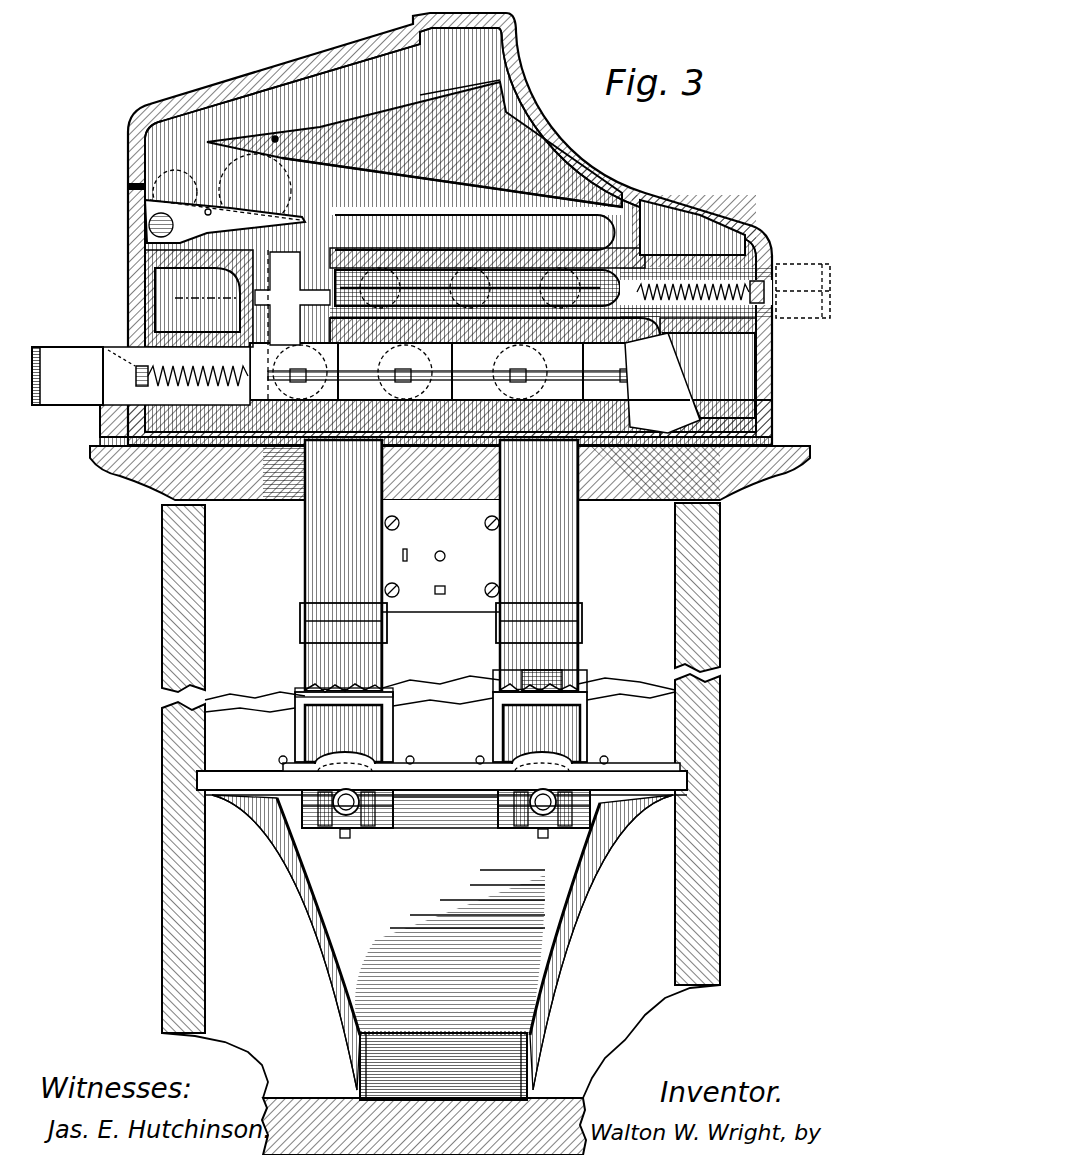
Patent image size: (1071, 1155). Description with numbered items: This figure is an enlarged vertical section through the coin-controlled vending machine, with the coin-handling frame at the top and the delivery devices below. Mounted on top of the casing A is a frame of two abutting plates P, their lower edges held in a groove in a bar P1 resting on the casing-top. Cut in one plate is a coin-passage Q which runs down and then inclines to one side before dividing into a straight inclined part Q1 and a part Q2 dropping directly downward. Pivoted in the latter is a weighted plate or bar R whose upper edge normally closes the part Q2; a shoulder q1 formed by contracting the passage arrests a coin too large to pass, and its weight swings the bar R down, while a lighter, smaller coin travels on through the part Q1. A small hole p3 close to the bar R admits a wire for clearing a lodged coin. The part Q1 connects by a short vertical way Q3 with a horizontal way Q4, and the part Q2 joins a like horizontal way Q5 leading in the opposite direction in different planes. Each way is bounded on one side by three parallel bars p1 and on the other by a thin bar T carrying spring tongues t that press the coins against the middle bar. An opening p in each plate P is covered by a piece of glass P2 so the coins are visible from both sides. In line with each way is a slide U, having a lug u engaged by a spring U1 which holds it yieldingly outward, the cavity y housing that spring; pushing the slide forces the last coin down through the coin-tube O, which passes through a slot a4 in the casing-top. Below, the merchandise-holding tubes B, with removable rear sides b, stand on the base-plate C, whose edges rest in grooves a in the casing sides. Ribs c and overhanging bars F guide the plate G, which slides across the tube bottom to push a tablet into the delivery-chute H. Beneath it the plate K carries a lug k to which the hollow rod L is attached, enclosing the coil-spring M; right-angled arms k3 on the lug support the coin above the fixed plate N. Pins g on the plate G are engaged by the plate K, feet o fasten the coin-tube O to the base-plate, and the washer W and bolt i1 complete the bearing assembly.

The coin-passage Q is at (450, 229).
The coin-passage part Q1 is at (414, 149).
The coin-passage part Q2 is at (266, 194).
The vertical way Q3 is at (495, 303).
The horizontal way Q4 is at (455, 307).
The horizontal way Q5 is at (248, 516).
The pivoted plate or bar R is at (282, 214).
The frame-plate P is at (650, 200).
The bar P1 is at (772, 440).
The piece of glass P2 is at (292, 325).
The opening p is at (218, 290).
The bars p1 is at (455, 260).
The hole p3 is at (135, 194).
The pivot q1 is at (268, 172).
The thin bar T is at (695, 356).
The slide U is at (80, 352).
The spring U1 is at (690, 246).
The lug u is at (70, 348).
The slot y is at (175, 298).
The spring tongues or fingers t is at (460, 371).
The rear side of tube b is at (645, 406).
The slot a4 is at (444, 531).
The casing A is at (160, 538).
The coin-tube O is at (441, 601).
The merchandise-holding tube B is at (393, 692).
The washer W is at (565, 680).
The coil-spring M is at (392, 752).
The base-plate C is at (232, 770).
The overhanging bars F is at (300, 762).
The pins g is at (485, 760).
The feet o is at (439, 745).
The ribs c is at (290, 775).
The grooves a is at (687, 781).
The lug k is at (320, 806).
The fixed plate N is at (300, 835).
The right-angled arms k3 is at (325, 835).
The bolt i1 is at (444, 849).
The rod L is at (355, 828).
The plate K is at (385, 826).
The plate G is at (420, 800).
The delivery-chute H is at (335, 1072).